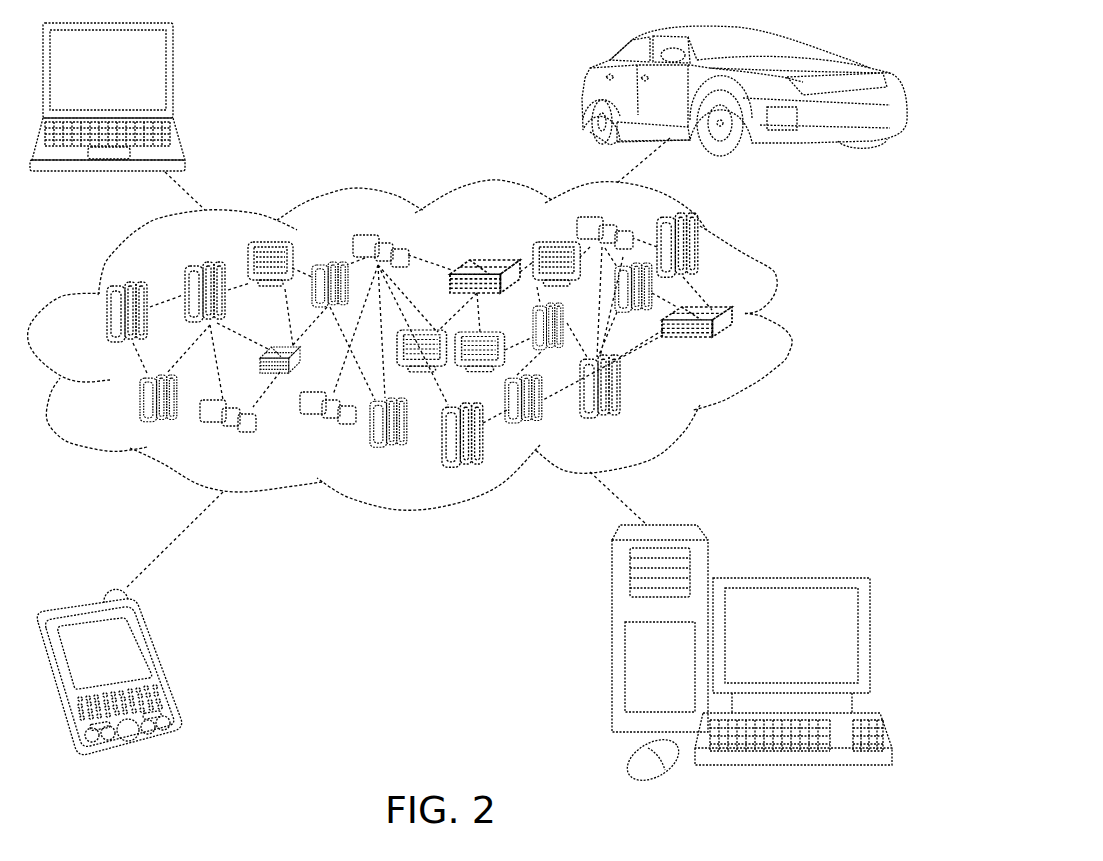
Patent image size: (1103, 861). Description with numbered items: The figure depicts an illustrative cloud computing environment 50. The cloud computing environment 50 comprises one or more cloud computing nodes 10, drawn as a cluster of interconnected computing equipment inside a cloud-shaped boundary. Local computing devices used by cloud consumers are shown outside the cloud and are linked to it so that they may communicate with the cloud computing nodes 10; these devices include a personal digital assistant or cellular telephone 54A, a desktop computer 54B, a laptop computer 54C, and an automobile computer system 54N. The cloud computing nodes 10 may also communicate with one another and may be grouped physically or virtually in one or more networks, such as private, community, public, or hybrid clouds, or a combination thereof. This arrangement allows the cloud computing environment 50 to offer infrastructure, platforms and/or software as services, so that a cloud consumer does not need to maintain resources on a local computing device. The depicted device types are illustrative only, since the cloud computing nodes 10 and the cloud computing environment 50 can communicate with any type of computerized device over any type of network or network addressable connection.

The cloud computing node 10 is at (735, 348).
The cloud computing environment 50 is at (788, 322).
The personal digital assistant (PDA) or cellular telephone 54A is at (167, 660).
The desktop computer 54B is at (790, 578).
The laptop computer 54C is at (173, 78).
The automobile computer system 54N is at (583, 93).